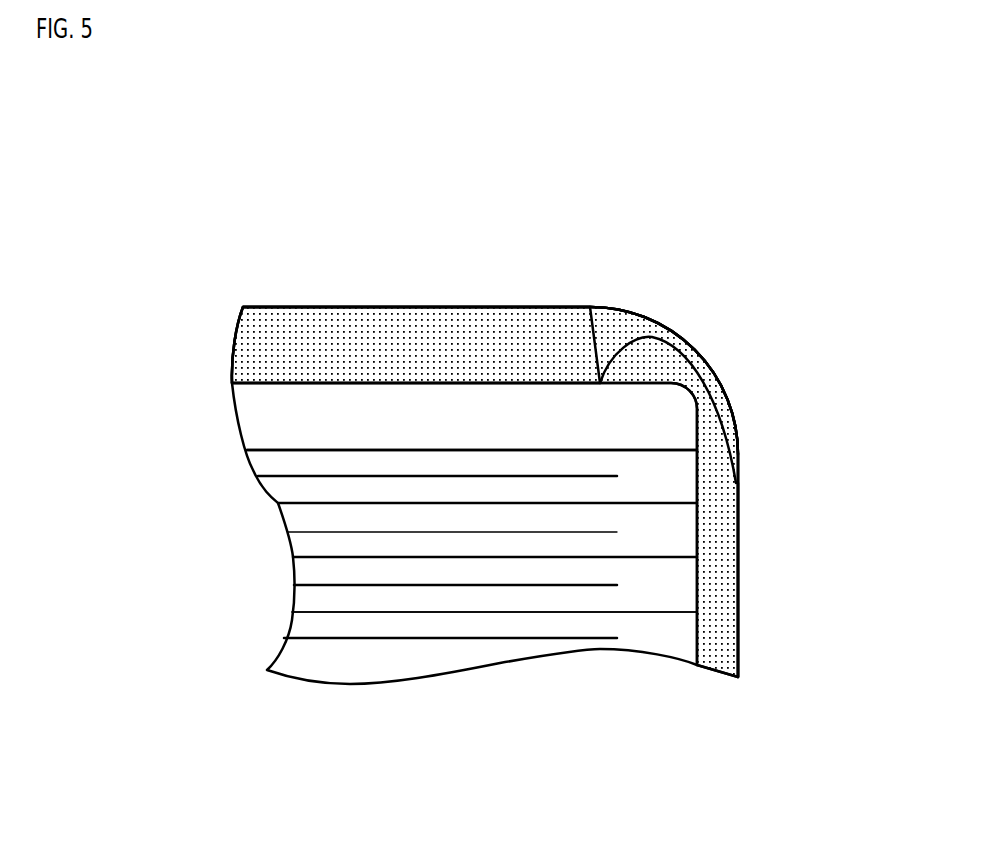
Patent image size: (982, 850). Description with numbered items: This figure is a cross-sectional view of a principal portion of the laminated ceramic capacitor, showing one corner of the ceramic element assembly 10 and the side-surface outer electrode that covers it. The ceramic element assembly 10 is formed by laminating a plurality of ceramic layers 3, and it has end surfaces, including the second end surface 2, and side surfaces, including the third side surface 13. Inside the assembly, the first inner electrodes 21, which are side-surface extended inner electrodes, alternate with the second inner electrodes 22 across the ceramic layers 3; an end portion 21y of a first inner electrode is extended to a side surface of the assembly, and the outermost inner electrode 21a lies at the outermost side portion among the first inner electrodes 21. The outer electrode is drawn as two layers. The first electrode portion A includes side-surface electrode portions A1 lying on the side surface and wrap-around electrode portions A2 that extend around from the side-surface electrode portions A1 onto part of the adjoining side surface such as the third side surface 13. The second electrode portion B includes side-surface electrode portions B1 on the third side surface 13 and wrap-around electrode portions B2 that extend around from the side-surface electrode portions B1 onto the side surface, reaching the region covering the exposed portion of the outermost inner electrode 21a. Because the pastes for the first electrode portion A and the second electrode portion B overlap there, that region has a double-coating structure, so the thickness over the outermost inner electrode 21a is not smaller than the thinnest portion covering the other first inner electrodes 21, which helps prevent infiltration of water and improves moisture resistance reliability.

The second end surface 2 is at (697, 550).
The ceramic layers 3 is at (587, 597).
The ceramic element assembly 10 is at (293, 366).
The third side surface 13 is at (367, 382).
The first inner electrodes 21 is at (508, 503).
The outermost inner electrodes 21a is at (660, 440).
The end portion 21y is at (697, 612).
The second inner electrodes 22 is at (333, 585).
The first electrode portion A is at (757, 508).
The side-surface electrode portions A1 is at (738, 600).
The wrap-around electrode portions A2 is at (658, 338).
The second electrode portion B is at (435, 307).
The side-surface electrode portions B1 is at (522, 307).
The wrap-around electrode portions B2 is at (713, 362).